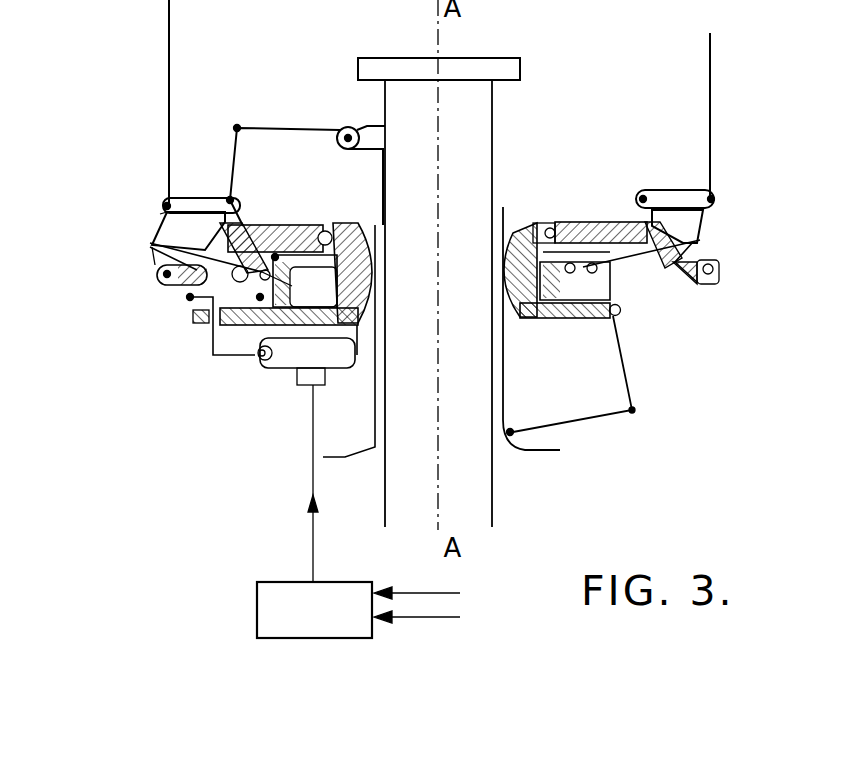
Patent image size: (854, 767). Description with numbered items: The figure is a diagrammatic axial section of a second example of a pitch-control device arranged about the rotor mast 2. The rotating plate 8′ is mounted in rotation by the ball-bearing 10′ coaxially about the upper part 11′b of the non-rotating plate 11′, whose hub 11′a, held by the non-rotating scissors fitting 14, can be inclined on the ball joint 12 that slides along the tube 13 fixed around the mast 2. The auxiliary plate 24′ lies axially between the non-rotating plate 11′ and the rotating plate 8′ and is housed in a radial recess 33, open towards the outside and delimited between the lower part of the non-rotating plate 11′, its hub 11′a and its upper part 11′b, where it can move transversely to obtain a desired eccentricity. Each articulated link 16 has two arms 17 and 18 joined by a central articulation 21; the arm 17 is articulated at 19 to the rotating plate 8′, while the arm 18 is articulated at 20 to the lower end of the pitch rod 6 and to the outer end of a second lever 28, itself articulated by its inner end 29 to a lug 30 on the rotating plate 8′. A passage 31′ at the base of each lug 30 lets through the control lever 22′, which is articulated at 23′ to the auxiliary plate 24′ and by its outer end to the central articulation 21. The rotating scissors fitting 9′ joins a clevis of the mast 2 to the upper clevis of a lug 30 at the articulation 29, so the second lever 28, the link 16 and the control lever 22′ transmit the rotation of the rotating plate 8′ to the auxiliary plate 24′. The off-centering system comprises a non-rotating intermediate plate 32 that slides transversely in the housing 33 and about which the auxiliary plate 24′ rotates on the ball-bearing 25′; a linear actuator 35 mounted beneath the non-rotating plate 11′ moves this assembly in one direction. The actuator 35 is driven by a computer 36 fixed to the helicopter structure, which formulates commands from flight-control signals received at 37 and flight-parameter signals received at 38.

The rotor mast 2 is at (502, 480).
The pitch rod 6 is at (168, 100).
The rotating plate 8′ is at (562, 222).
The rotating scissors fitting 9′ is at (298, 128).
The ball-bearing 10′ is at (550, 222).
The non-rotating plate 11′ is at (567, 317).
The hub of the non-rotating plate 11′a is at (347, 290).
The upper part of the non-rotating plate 11′b is at (348, 240).
The ball joint 12 is at (516, 285).
The tube 13 is at (377, 423).
The non-rotating scissors fitting 14 is at (592, 416).
The articulated link 16 is at (116, 241).
The arm 17 is at (150, 262).
The arm 18 is at (160, 213).
The articulation 19 is at (173, 290).
The articulation 20 is at (164, 199).
The central articulation 21 is at (150, 243).
The control lever 22′ is at (165, 280).
The articulation 23′ is at (260, 225).
The auxiliary plate 24′ is at (237, 277).
The ball-bearing 25′ is at (290, 255).
The second lever 28 is at (200, 204).
The inner end articulation 29 is at (233, 203).
The lug 30 is at (232, 232).
The passage 31′ is at (175, 292).
The intermediate plate 32 is at (540, 224).
The radial recess 33 is at (310, 300).
The actuator 35 is at (285, 360).
The computer 36 is at (295, 630).
The flight-control signals input 37 is at (443, 593).
The flight-parameter signals input 38 is at (433, 617).